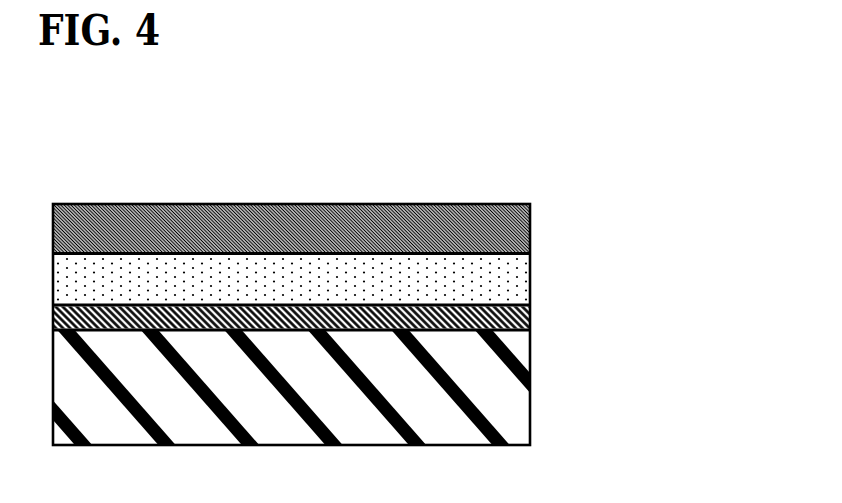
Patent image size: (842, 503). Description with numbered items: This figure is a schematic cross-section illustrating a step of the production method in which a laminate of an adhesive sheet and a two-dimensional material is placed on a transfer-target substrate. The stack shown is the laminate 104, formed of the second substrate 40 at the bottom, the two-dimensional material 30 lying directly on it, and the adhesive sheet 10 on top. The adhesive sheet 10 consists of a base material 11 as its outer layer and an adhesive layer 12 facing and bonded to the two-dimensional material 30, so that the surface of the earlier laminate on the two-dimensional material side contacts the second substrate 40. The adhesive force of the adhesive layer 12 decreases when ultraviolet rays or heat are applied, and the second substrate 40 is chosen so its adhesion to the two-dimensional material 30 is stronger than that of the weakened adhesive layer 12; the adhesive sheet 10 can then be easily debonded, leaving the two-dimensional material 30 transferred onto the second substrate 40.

The laminate 104 is at (325, 190).
The adhesive sheet 10 is at (395, 255).
The base material 11 is at (530, 228).
The adhesive layer 12 is at (530, 264).
The two-dimensional material 30 is at (530, 308).
The second substrate 40 is at (530, 391).